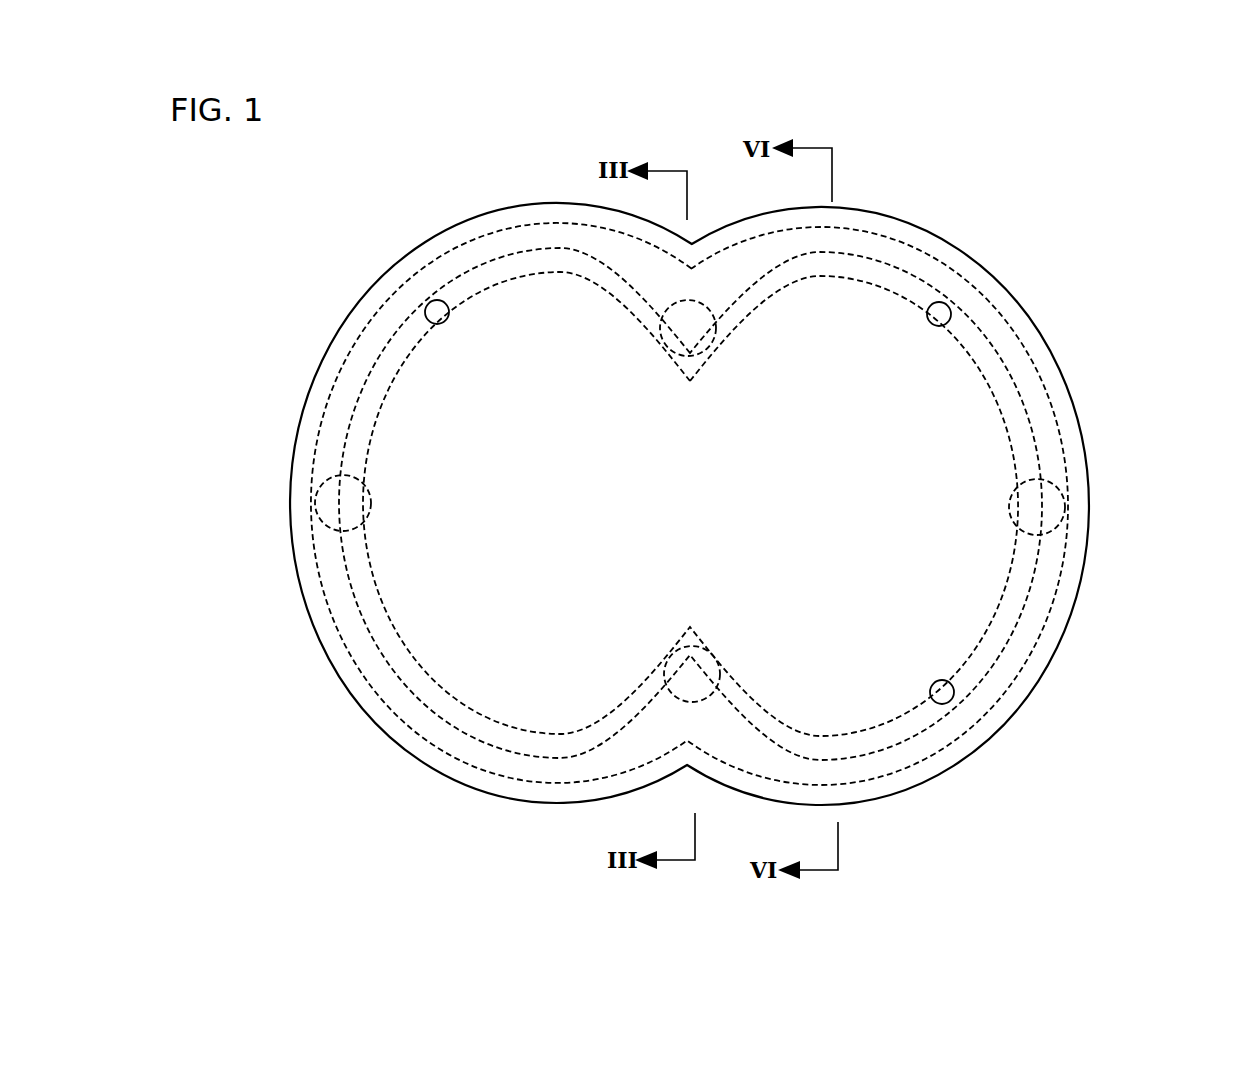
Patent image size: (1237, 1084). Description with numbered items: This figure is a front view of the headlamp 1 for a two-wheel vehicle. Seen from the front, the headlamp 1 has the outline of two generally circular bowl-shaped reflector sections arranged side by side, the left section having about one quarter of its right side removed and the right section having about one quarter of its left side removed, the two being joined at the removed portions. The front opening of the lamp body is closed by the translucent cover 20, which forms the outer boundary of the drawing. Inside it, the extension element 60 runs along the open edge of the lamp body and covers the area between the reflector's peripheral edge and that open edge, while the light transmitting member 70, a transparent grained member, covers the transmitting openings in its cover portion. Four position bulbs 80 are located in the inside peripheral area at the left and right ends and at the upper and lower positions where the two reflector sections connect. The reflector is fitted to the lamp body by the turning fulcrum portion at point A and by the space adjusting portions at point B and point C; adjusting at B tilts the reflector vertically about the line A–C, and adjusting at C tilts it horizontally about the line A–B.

The headlamp 1 is at (1052, 254).
The translucent cover 20 is at (488, 261).
The extension element 60 is at (417, 683).
The light transmitting member 70 is at (493, 758).
The position bulbs 80 is at (704, 302).
The turning fulcrum portion A is at (952, 303).
The space adjusting portion B is at (948, 703).
The space adjusting portion C is at (428, 303).